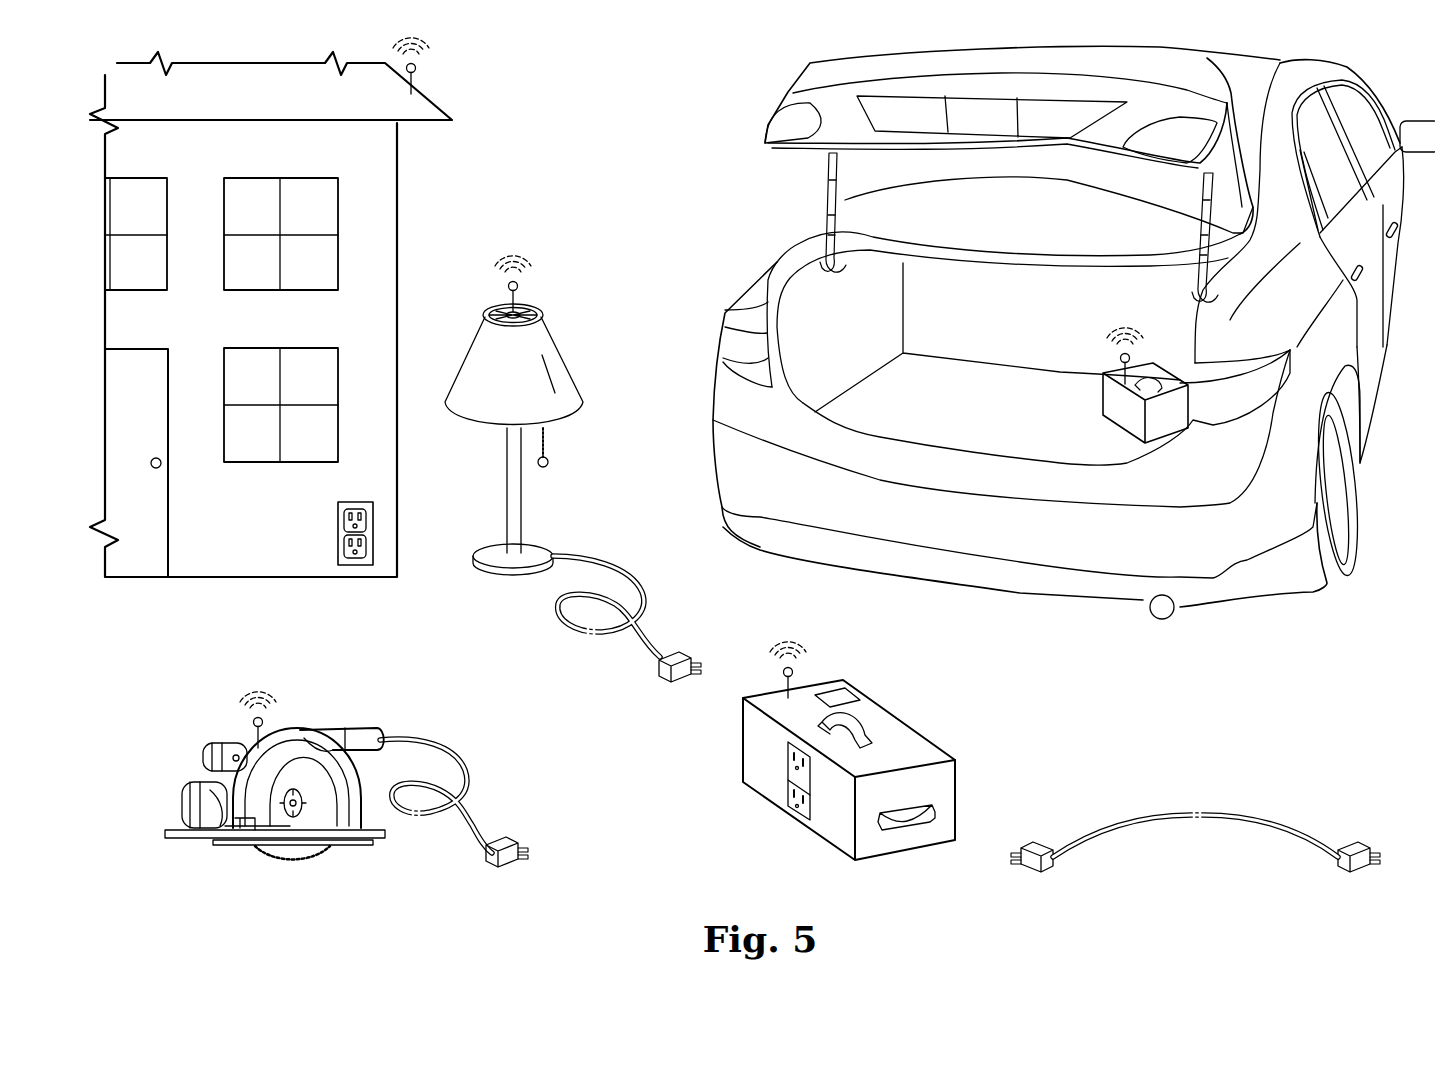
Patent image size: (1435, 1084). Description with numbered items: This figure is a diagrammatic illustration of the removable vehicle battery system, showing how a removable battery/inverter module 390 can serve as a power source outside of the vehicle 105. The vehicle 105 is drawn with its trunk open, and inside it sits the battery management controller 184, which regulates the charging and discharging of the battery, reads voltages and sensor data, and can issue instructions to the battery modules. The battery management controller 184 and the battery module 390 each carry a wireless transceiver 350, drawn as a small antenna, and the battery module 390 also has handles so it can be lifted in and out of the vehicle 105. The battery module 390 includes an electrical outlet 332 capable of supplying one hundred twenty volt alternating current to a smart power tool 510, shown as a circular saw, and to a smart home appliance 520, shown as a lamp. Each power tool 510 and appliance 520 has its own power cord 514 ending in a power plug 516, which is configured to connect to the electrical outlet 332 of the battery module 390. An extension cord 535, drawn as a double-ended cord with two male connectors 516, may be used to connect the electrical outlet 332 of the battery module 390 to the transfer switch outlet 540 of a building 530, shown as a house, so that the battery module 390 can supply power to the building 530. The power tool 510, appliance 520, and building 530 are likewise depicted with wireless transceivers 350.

The vehicle 105 is at (792, 255).
The battery management controller 184 is at (1103, 392).
The electrical outlet 332 is at (786, 787).
The wireless transceiver 350 is at (427, 50).
The battery module 390 is at (905, 740).
The smart power tool 510 is at (233, 846).
The power cord 514 is at (586, 562).
The power plug 516 is at (667, 684).
The smart home appliance 520 is at (572, 370).
The building 530 is at (398, 192).
The extension cord 535 is at (1226, 813).
The transfer switch outlet 540 is at (338, 532).